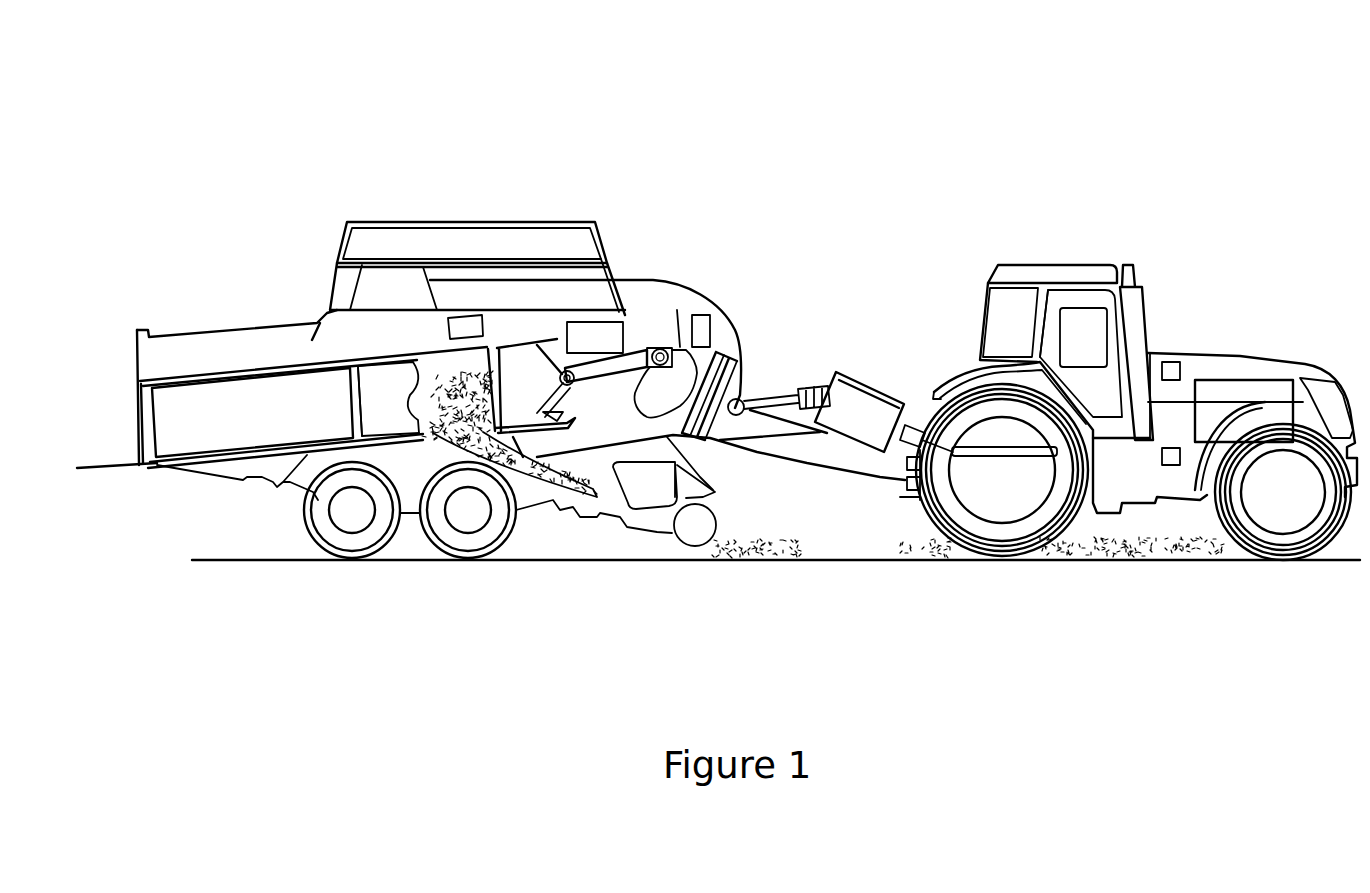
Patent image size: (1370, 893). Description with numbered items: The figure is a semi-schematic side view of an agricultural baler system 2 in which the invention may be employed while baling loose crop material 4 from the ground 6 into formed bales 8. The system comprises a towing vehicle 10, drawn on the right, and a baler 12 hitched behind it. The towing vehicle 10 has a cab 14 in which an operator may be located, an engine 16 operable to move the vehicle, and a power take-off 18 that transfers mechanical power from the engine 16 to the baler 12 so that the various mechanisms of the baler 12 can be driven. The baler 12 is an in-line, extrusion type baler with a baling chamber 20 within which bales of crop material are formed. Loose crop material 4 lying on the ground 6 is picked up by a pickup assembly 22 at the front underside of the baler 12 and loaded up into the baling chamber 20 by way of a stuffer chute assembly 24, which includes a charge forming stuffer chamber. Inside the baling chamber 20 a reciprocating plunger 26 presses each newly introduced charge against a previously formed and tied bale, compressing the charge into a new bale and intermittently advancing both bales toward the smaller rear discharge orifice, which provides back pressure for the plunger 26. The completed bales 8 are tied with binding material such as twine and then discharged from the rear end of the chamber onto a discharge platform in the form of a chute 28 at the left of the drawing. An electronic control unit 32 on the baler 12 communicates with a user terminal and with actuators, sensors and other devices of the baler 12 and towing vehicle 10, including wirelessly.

The agricultural baler system 2 is at (745, 144).
The loose crop material 4 is at (797, 542).
The ground 6 is at (588, 562).
The formed bales 8 is at (257, 425).
The towing vehicle 10 is at (1185, 301).
The baler 12 is at (519, 206).
The cab 14 is at (1045, 263).
The engine 16 is at (1267, 394).
The power take-off (PTO) 18 is at (1009, 455).
The baling chamber 20 is at (400, 355).
The pickup assembly 22 is at (656, 518).
The stuffer chute assembly 24 is at (547, 492).
The reciprocating plunger 26 is at (543, 370).
The chute 28 is at (112, 470).
The electronic control unit 32 is at (600, 341).